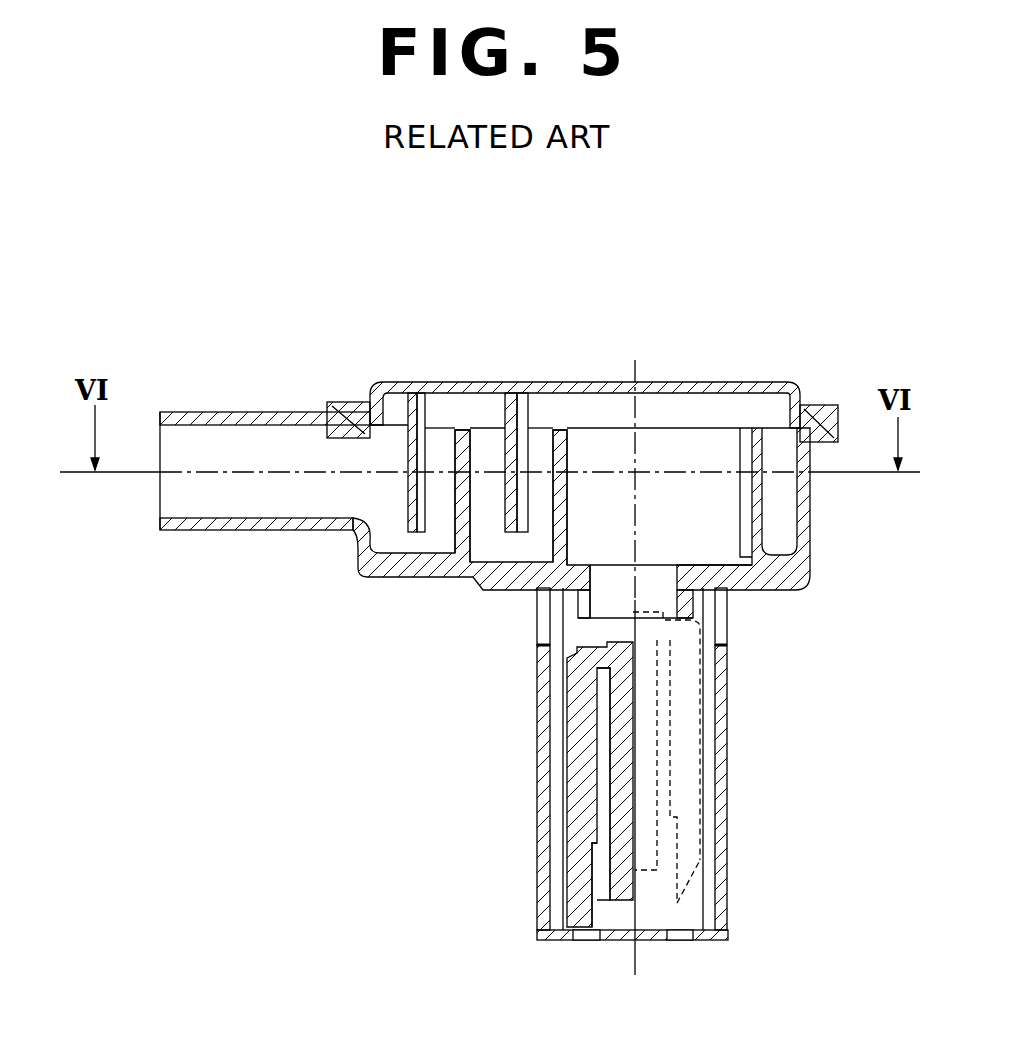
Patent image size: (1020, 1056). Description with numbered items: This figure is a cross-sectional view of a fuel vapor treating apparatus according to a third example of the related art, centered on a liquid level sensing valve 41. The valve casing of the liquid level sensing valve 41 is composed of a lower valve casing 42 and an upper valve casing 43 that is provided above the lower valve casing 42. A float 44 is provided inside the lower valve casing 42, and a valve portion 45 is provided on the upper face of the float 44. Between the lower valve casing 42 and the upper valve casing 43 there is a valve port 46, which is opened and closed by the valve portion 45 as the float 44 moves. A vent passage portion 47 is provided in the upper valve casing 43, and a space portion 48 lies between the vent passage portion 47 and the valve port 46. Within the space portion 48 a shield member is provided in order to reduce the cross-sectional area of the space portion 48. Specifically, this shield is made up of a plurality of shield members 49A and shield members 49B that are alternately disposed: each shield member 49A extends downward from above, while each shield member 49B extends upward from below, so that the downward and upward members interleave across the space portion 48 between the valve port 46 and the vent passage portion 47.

The liquid level sensing valve 41 is at (512, 597).
The lower valve casing 42 is at (545, 800).
The upper valve casing 43 is at (712, 385).
The float 44 is at (575, 850).
The valve portion 45 is at (572, 678).
The valve port 46 is at (580, 603).
The vent passage portion 47 is at (208, 527).
The space portion 48 is at (598, 452).
The shield member 49A is at (408, 492).
The shield member 49B is at (455, 513).